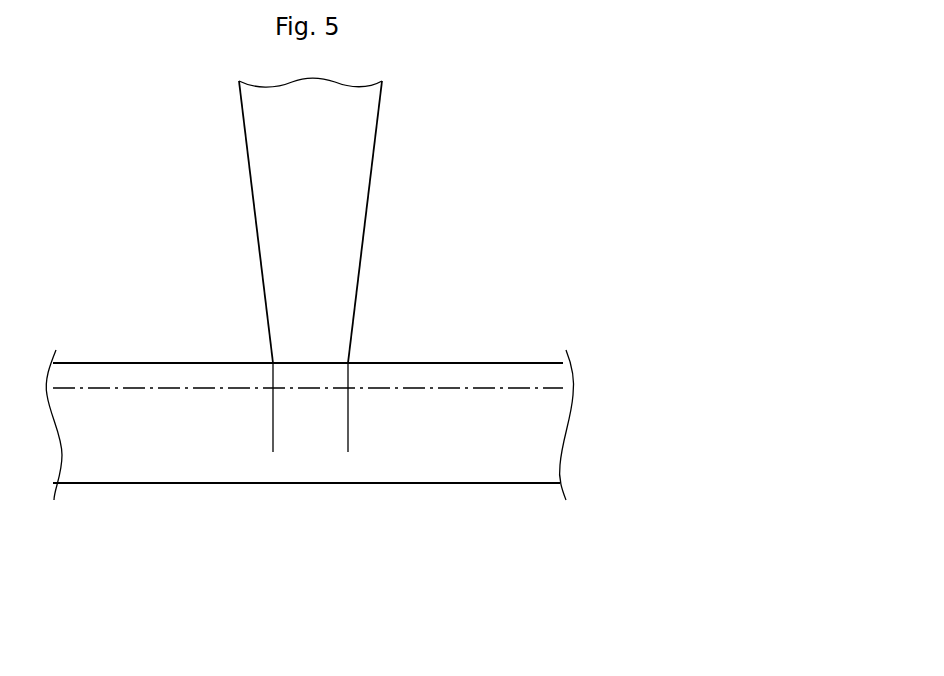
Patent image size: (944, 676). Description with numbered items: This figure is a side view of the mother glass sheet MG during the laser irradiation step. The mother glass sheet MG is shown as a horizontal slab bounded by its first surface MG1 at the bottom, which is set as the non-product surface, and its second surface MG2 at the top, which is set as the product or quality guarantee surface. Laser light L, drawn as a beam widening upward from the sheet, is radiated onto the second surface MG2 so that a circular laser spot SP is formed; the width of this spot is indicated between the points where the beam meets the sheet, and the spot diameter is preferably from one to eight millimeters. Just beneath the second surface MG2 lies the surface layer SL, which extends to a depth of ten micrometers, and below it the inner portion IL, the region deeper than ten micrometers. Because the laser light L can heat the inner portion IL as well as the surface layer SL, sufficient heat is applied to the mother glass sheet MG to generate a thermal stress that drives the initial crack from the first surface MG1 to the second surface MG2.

The laser light L is at (372, 162).
The mother glass sheet MG is at (488, 355).
The first surface MG1 is at (194, 483).
The second surface MG2 is at (188, 363).
The surface layer SL is at (556, 375).
The inner portion IL is at (535, 428).
The laser spot SP is at (348, 442).